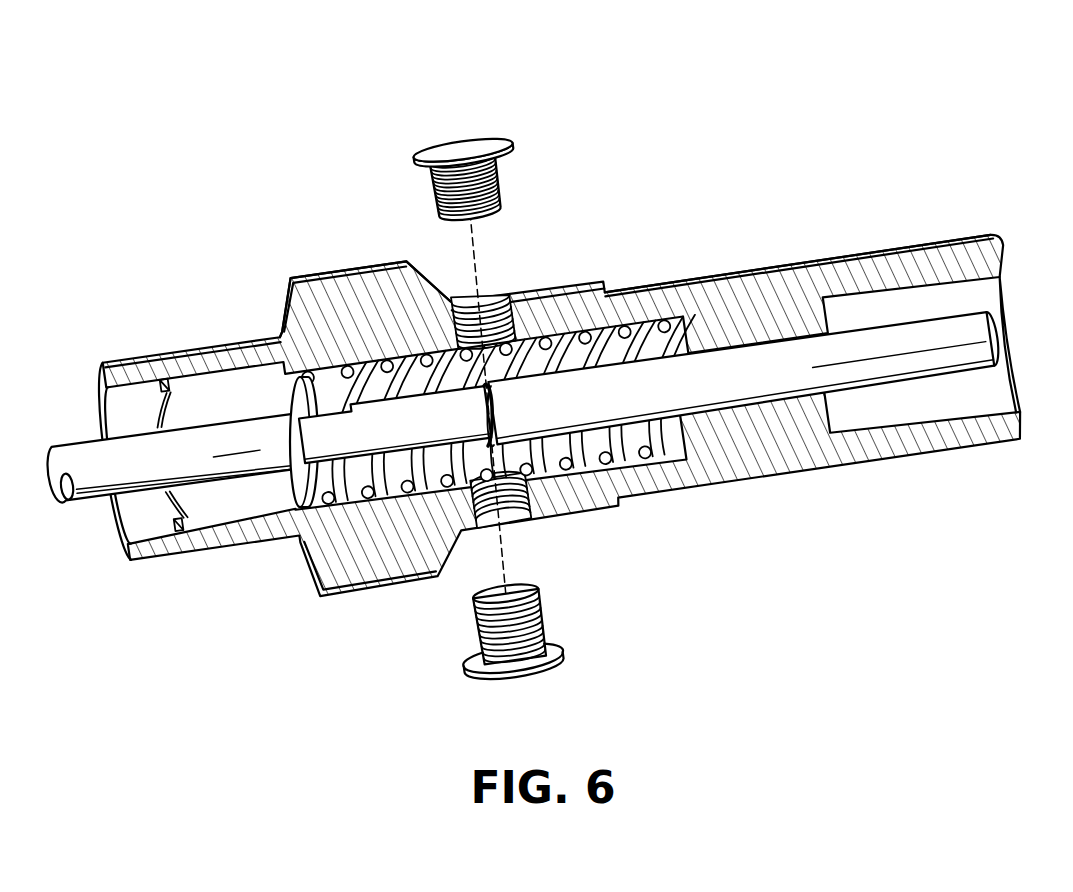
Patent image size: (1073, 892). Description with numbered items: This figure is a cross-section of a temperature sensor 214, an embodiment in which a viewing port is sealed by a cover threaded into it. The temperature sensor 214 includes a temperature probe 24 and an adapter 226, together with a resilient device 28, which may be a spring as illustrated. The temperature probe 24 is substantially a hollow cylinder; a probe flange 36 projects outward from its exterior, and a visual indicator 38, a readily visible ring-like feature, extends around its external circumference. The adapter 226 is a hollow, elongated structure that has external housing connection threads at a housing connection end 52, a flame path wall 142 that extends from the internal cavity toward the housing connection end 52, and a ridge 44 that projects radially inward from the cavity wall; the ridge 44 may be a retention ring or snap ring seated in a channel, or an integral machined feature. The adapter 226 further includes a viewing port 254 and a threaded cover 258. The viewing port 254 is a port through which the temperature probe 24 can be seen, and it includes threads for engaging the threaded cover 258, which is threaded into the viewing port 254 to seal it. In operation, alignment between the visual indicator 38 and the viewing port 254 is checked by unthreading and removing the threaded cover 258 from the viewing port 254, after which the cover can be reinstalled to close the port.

The temperature probe 24 is at (76, 420).
The resilient device 28 is at (362, 478).
The probe flange 36 is at (308, 492).
The visual indicator 38 is at (500, 407).
The ridge 44 is at (164, 386).
The housing connection end 52 is at (1007, 260).
The flame path wall 142 is at (775, 412).
The temperature sensor 214 is at (344, 262).
The adapter 226 is at (717, 256).
The viewing port 254 is at (500, 290).
The threaded cover 258 is at (463, 152).